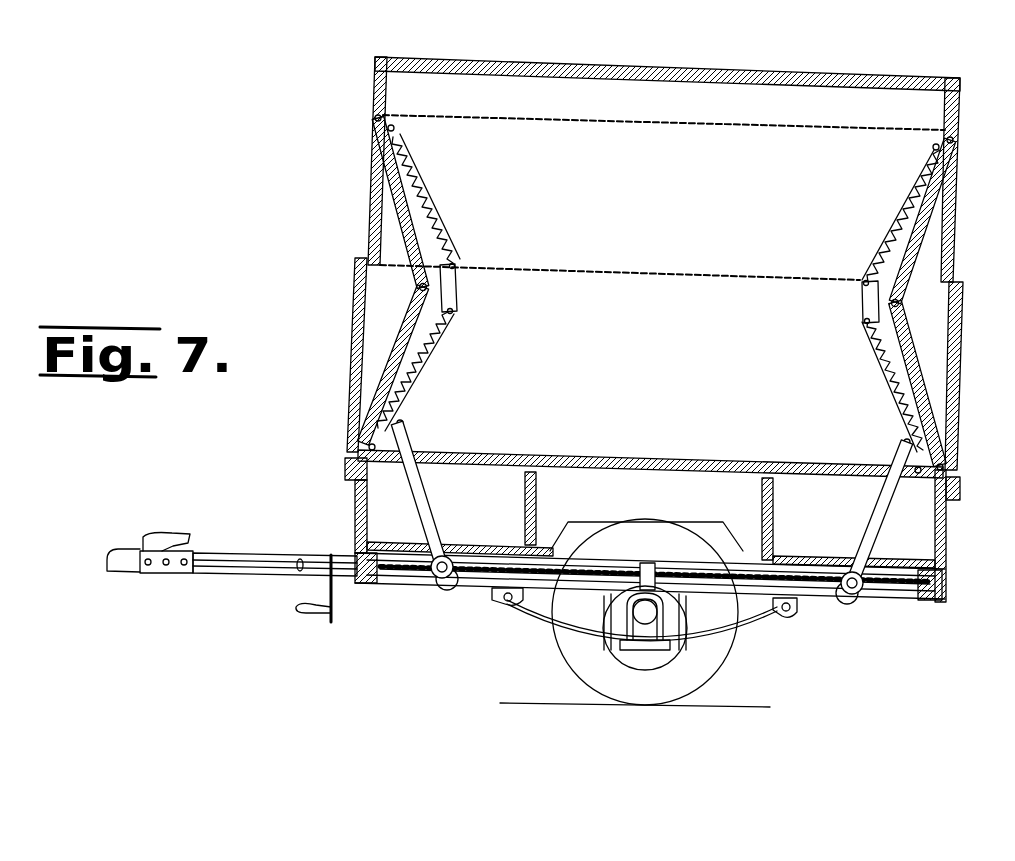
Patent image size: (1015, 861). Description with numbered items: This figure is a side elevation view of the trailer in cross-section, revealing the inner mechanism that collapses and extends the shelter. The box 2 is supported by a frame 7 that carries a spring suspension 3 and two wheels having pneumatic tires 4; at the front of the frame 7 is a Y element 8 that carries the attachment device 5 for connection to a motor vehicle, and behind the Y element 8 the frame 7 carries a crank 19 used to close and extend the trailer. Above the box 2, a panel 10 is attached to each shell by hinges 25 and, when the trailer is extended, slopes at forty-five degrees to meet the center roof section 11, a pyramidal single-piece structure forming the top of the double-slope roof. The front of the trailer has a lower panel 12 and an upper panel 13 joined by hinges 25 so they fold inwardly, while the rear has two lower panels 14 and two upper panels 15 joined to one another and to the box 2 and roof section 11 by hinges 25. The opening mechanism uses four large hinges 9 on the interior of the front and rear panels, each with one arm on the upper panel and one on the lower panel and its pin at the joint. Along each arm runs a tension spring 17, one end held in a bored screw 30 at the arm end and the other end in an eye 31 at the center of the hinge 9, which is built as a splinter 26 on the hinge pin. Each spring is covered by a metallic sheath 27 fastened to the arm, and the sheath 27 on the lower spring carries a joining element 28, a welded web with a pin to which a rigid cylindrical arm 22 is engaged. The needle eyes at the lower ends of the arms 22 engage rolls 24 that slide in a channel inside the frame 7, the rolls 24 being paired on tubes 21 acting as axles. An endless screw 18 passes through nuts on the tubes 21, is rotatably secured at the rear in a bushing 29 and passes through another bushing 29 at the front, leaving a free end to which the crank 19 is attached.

The box 2 is at (947, 534).
The spring suspension 3 is at (510, 606).
The pneumatic tires 4 is at (584, 657).
The attachment device 5 is at (176, 570).
The frame 7 is at (355, 553).
The Y element 8 is at (252, 570).
The large hinge 9 is at (419, 289).
The panel 10 is at (372, 174).
The center roof section 11 is at (690, 64).
The lower panel 12 is at (400, 352).
The upper panel 13 is at (402, 234).
The lower panels 14 is at (940, 355).
The upper panels 15 is at (945, 262).
The tension spring 17 is at (440, 216).
The endless screw 18 is at (478, 556).
The crank 19 is at (334, 608).
The tube 21 is at (450, 586).
The rigid cylindrical arm 22 is at (426, 500).
The rolls 24 is at (436, 580).
The hinges 25 is at (374, 118).
The splinter 26 is at (452, 288).
The metallic sheath 27 is at (430, 186).
The joining element 28 is at (403, 420).
The bushing 29 is at (366, 580).
The screw 30 is at (395, 128).
The eye 31 is at (456, 263).